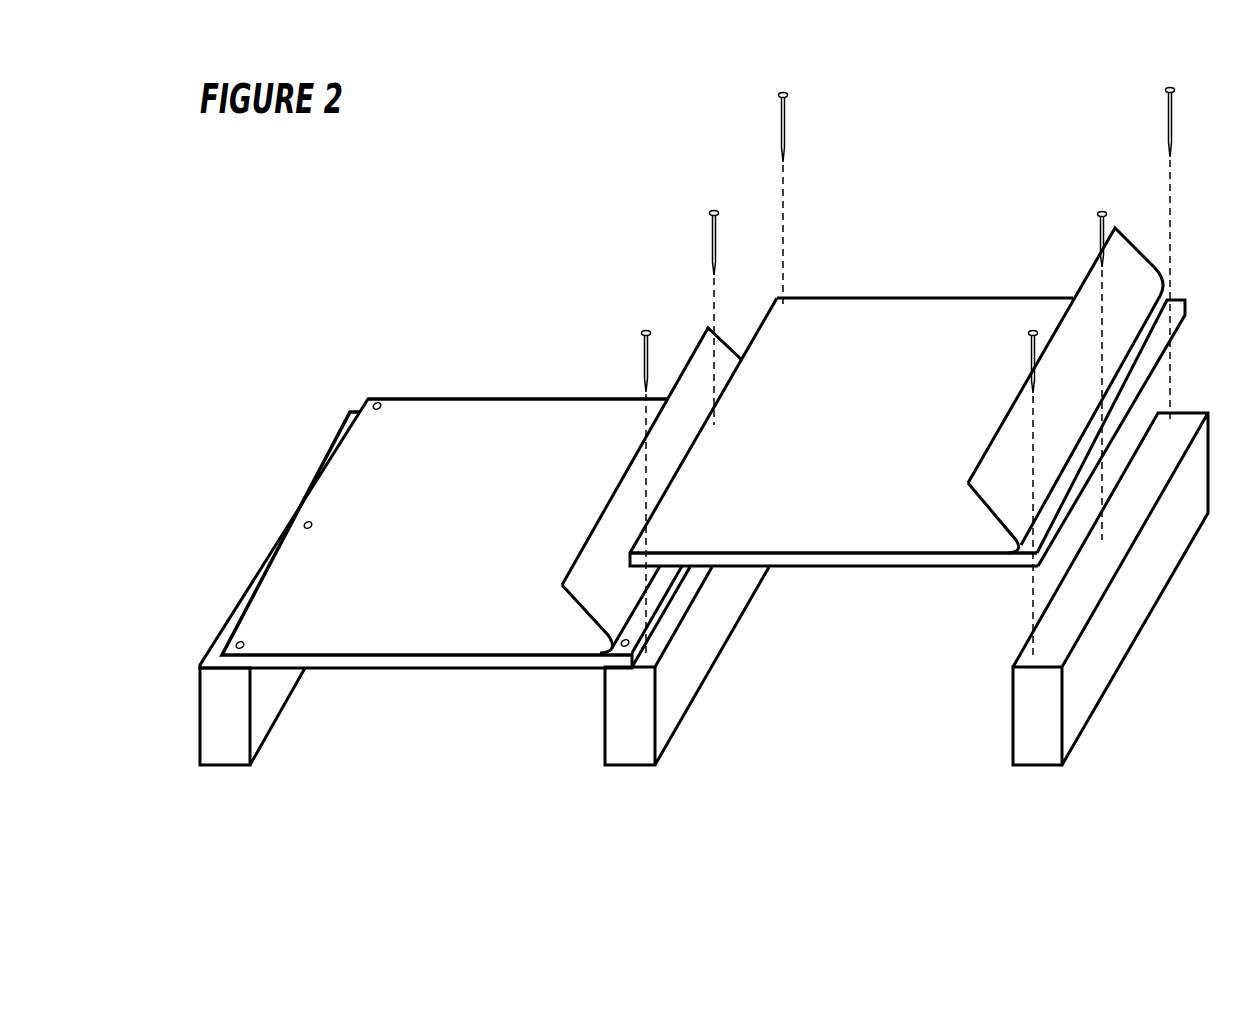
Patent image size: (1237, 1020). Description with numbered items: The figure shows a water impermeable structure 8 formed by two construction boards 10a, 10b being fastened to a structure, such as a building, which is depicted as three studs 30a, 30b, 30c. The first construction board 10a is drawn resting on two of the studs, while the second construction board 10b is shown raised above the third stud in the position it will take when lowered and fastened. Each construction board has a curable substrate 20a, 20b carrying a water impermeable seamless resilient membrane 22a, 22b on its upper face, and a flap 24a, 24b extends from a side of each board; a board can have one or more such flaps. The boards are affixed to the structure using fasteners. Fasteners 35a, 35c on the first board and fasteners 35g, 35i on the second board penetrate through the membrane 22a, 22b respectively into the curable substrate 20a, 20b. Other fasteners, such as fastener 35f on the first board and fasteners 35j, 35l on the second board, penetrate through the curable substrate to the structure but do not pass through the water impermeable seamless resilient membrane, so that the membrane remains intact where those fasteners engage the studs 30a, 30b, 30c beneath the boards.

The water impermeable structure 8 is at (588, 158).
The construction board 10a is at (566, 379).
The construction board 10b is at (978, 280).
The curable substrate 20a is at (432, 661).
The curable substrate 20b is at (856, 560).
The water impermeable seamless resilient membrane 22a is at (466, 420).
The water impermeable seamless resilient membrane 22b is at (867, 320).
The flap 24a is at (602, 543).
The flap 24b is at (1006, 450).
The structure 30a is at (222, 758).
The structure 30b is at (627, 758).
The structure 30c is at (1034, 758).
The fastener 35a is at (375, 405).
The fastener 35c is at (238, 645).
The fastener 35f is at (630, 648).
The fastener 35g is at (782, 92).
The fastener 35i is at (644, 331).
The fastener 35j is at (1169, 89).
The fastener 35l is at (1032, 330).